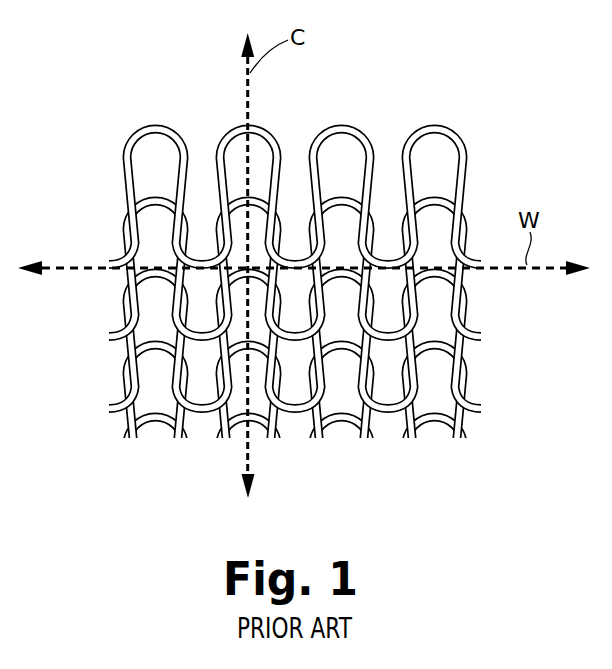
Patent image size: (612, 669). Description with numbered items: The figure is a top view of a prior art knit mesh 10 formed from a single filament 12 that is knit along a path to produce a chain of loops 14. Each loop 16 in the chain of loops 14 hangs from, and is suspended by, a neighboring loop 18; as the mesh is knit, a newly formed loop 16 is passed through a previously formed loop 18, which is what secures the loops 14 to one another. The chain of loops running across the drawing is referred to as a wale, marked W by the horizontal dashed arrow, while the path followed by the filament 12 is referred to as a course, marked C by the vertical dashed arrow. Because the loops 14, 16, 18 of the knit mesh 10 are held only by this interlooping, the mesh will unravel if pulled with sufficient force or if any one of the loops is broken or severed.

The knit mesh 10 is at (291, 296).
The filament 12 is at (122, 163).
The chain of loops 14 is at (242, 308).
The loop 16 is at (283, 148).
The neighboring loop 18 is at (280, 238).